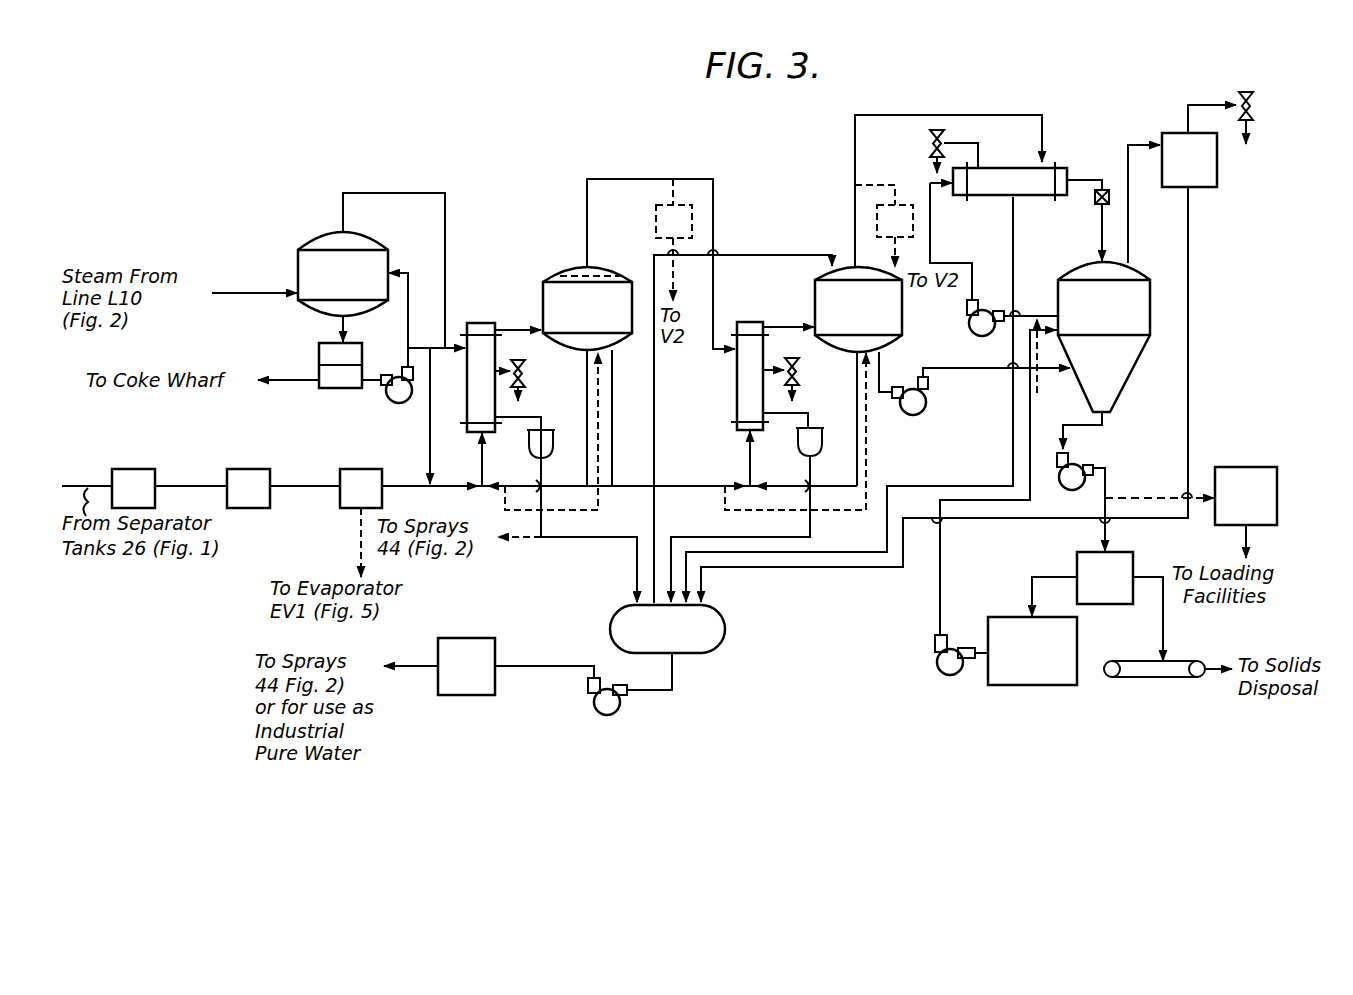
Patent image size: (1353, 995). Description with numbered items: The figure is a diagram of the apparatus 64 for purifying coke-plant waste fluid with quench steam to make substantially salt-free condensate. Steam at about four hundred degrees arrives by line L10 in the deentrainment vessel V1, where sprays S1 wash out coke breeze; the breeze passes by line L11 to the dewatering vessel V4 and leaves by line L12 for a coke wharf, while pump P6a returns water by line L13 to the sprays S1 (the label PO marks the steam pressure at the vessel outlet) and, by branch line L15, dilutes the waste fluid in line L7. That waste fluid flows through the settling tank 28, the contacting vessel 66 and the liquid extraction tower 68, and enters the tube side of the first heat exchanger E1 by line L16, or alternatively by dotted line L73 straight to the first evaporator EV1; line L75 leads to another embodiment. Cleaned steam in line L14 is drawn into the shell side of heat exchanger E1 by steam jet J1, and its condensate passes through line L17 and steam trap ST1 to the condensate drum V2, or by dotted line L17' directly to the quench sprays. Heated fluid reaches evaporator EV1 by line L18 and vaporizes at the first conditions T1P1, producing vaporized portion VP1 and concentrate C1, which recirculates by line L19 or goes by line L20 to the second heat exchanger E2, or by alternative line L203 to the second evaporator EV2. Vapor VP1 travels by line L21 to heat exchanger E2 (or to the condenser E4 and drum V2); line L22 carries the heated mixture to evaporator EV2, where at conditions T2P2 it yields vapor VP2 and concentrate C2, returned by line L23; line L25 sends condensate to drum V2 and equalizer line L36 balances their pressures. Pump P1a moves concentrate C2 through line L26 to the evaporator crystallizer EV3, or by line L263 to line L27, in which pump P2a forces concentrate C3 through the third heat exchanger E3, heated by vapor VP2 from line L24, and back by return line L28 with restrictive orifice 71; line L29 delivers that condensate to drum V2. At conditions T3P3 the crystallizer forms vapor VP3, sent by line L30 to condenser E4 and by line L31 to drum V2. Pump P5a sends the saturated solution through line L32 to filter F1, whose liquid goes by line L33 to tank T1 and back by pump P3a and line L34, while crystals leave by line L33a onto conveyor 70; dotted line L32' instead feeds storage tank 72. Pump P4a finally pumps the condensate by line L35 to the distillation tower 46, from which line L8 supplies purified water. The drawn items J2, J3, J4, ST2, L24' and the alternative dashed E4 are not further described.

The apparatus 64 is at (630, 147).
The settling tank 28 is at (152, 468).
The contacting vessel 66 is at (267, 468).
The liquid extraction tower 68 is at (380, 468).
The distillation tower 46 is at (460, 637).
The conveyor 70 is at (1140, 678).
The salt solution storage tank 72 is at (1238, 466).
The restrictive orifice 71 is at (1112, 190).
The deentrainment vessel V1 is at (356, 285).
The condensate drum V2 is at (681, 639).
The dewatering vessel V4 is at (356, 390).
The first heat exchanger E1 is at (484, 320).
The second heat exchanger E2 is at (736, 388).
The third heat exchanger E3 is at (1010, 162).
The condenser E4 is at (686, 232).
The first evaporator EV1 is at (604, 316).
The second evaporator EV2 is at (876, 313).
The evaporator crystallizer EV3 is at (1122, 312).
The steam jet J1 is at (526, 373).
The ejector J2 is at (800, 371).
The ejector J3 is at (928, 145).
The ejector J4 is at (1254, 103).
The steam trap ST1 is at (553, 445).
The steam trap ST2 is at (822, 443).
The pump P1a is at (922, 411).
The pump P2a is at (972, 338).
The pump P3a is at (940, 672).
The pump P4a is at (620, 712).
The pump P5a is at (1062, 487).
The pump P6a is at (388, 402).
The tank T1 is at (1046, 663).
The filter F1 is at (1116, 589).
The sprays S1 is at (398, 270).
The concentrate C1 is at (608, 340).
The second concentrate C2 is at (878, 338).
The third concentrate C3 is at (1130, 372).
The vaporized portion VP1 is at (558, 278).
The second vaporized portion VP2 is at (820, 276).
The third vaporized portion VP3 is at (1125, 280).
The first predetermined temperature and pressure T1P1 is at (612, 270).
The second predetermined temperature and pressure T2P2 is at (882, 318).
The third predetermined temperature and pressure T3P3 is at (1154, 338).
The pressure PO is at (334, 245).
The line L7 is at (184, 484).
The dotted line L73 is at (566, 514).
The line L75 is at (340, 548).
The line L8 is at (408, 668).
The steam line L10 is at (262, 292).
The line L11 is at (338, 323).
The line L12 is at (285, 378).
The line L13 is at (406, 325).
The line L14 is at (420, 190).
The branch line L15 is at (433, 440).
The line L16 is at (490, 445).
The line L17 is at (566, 496).
The dotted line L17' is at (526, 565).
The line L18 is at (510, 325).
The line L19 is at (574, 430).
The line L20 is at (744, 458).
The line L203 is at (843, 514).
The line L21 is at (583, 196).
The line L22 is at (790, 326).
The line L23 is at (856, 452).
The line L24 is at (915, 191).
The line L24' is at (884, 169).
The line L25 is at (795, 520).
The line L26 is at (940, 372).
The line L263 is at (1059, 367).
The line L27 is at (932, 236).
The return line L28 is at (1098, 227).
The condensate line L29 is at (1016, 258).
The line L30 is at (1128, 250).
The line L31 is at (1190, 282).
The line L32 is at (1091, 431).
The dotted line L32' is at (1159, 479).
The line L33 is at (1046, 572).
The line L33a is at (1166, 631).
The line L34 is at (948, 562).
The line L35 is at (538, 660).
The equalizer line L36 is at (792, 252).